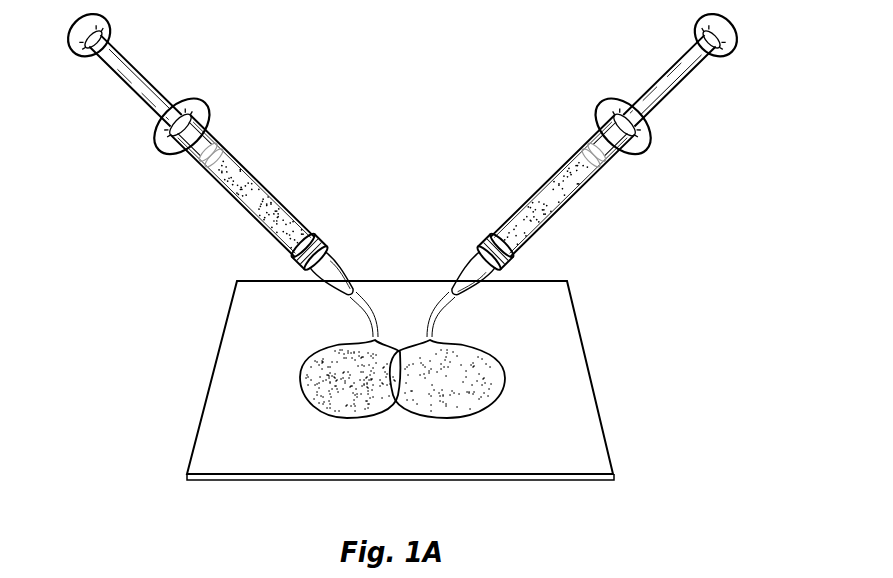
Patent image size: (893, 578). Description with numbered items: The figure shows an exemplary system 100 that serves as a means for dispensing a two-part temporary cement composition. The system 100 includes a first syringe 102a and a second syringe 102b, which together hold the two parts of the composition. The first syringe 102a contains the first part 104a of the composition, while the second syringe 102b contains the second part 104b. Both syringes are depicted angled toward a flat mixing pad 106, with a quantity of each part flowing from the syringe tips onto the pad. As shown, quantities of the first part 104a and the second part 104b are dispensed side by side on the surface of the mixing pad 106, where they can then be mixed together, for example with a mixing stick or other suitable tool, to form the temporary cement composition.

The system 100 is at (402, 240).
The first syringe 102a is at (543, 157).
The second syringe 102b is at (267, 157).
The first part 104a is at (528, 218).
The second part 104b is at (280, 218).
The mixing pad 106 is at (270, 452).